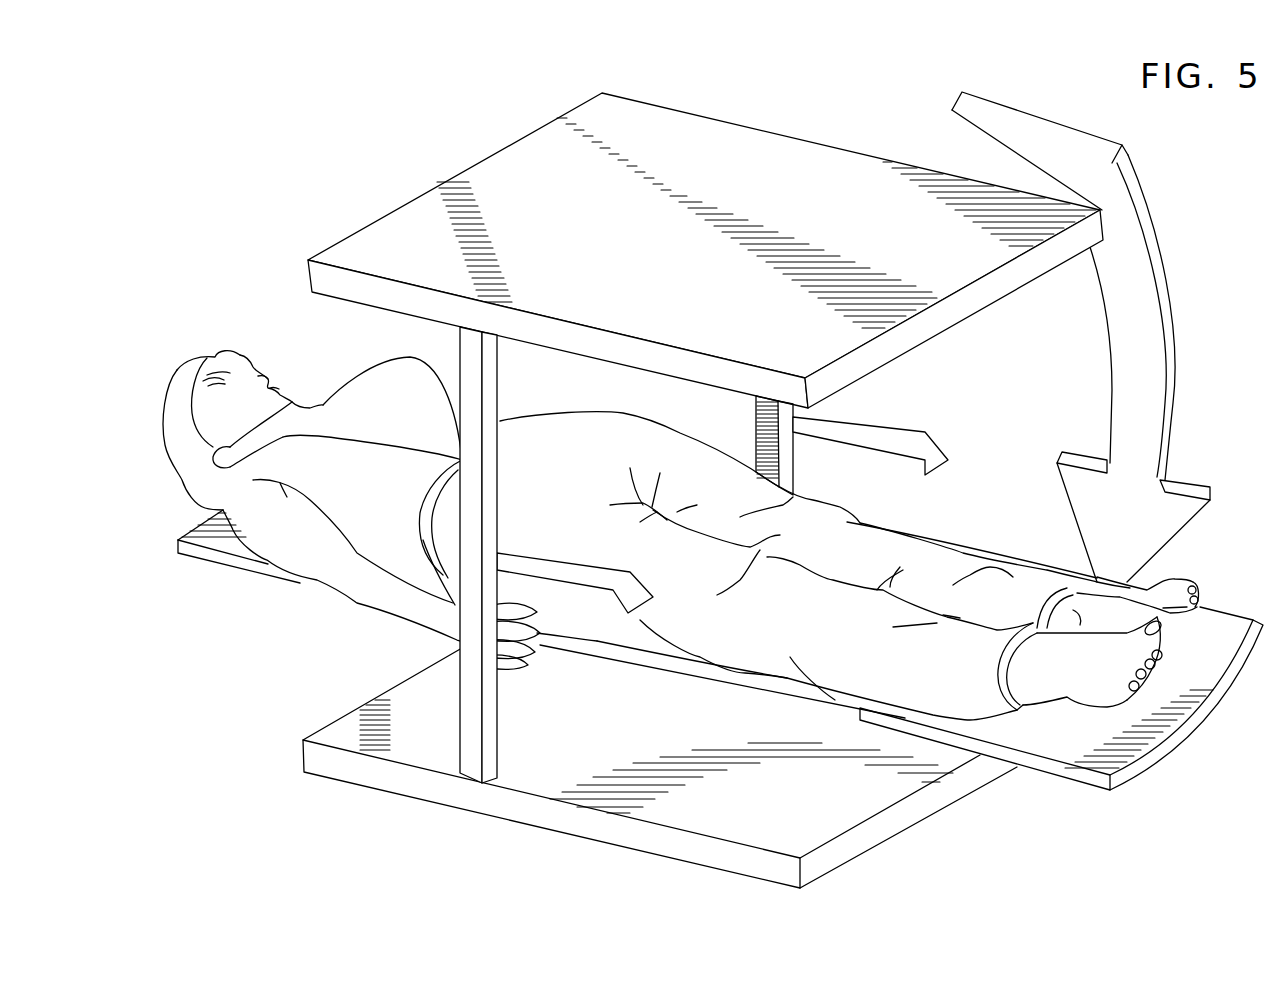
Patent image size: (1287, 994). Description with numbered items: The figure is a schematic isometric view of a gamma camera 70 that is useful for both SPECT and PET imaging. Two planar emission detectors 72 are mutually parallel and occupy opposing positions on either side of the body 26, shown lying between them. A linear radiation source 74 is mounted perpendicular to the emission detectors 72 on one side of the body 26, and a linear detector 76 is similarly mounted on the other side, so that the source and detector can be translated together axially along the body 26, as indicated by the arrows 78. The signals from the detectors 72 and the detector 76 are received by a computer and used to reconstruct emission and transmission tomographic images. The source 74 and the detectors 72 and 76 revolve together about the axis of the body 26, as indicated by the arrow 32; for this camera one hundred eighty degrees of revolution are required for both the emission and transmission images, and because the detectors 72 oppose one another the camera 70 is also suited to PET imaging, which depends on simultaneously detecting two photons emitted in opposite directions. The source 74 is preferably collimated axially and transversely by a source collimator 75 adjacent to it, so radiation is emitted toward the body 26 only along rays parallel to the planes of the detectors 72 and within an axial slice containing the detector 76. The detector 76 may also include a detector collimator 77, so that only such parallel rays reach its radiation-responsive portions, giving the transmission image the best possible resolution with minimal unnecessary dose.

The body 26 is at (170, 433).
The arrow 32 is at (1135, 237).
The gamma camera 70 is at (447, 187).
The planar emission detectors 72 is at (700, 122).
The linear radiation source 74 is at (800, 440).
The source collimator 75 is at (755, 412).
The linear detector 76 is at (462, 717).
The detector collimator 77 is at (497, 700).
The arrows 78 is at (937, 447).